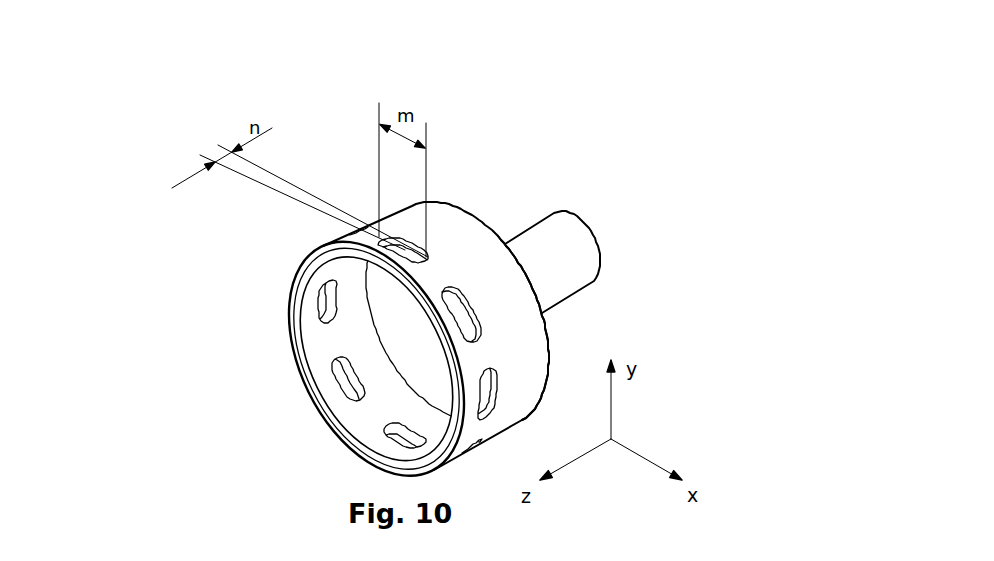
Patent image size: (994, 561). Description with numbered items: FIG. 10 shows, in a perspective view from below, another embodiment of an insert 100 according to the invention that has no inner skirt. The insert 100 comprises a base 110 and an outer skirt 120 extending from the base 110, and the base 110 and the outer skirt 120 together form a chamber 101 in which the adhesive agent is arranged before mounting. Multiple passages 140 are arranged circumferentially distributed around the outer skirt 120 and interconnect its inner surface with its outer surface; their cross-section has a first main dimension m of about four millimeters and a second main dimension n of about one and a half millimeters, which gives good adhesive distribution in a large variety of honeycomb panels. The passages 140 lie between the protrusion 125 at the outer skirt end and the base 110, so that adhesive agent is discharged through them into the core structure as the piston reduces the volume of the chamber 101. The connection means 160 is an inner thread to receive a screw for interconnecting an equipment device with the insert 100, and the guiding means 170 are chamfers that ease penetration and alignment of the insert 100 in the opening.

The insert 100 is at (153, 65).
The chamber 101 is at (410, 343).
The base 110 is at (550, 340).
The outer skirt 120 is at (460, 250).
The protrusion 125 is at (327, 382).
The passages 140 is at (405, 252).
The connection means 160 is at (553, 255).
The guiding means 170 is at (350, 438).